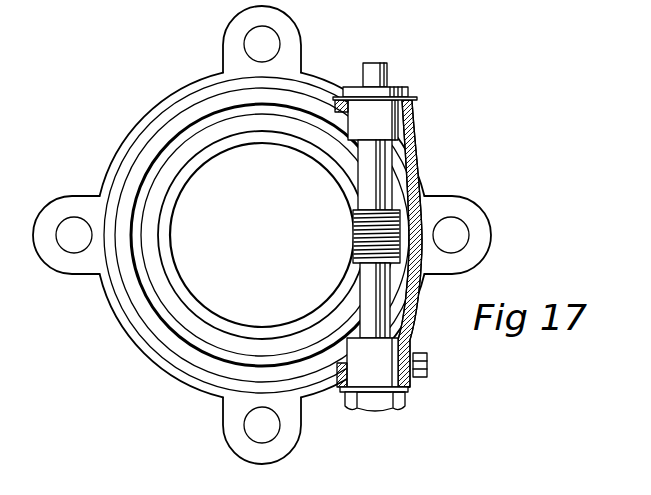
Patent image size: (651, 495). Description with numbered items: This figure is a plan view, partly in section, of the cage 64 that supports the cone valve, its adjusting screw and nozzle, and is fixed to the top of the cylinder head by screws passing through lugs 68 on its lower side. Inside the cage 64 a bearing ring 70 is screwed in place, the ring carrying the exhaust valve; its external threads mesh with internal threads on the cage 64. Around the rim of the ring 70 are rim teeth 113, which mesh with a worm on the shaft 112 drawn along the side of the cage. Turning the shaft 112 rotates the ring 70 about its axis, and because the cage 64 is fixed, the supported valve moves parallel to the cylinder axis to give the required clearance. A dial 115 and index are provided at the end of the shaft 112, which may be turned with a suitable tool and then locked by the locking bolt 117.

The cage 64 is at (410, 124).
The lugs 68 is at (63, 260).
The bearing ring 70 is at (182, 310).
The shaft 112 is at (373, 170).
The rim teeth 113 is at (430, 200).
The dial 115 is at (417, 97).
The locking bolt 117 is at (427, 371).